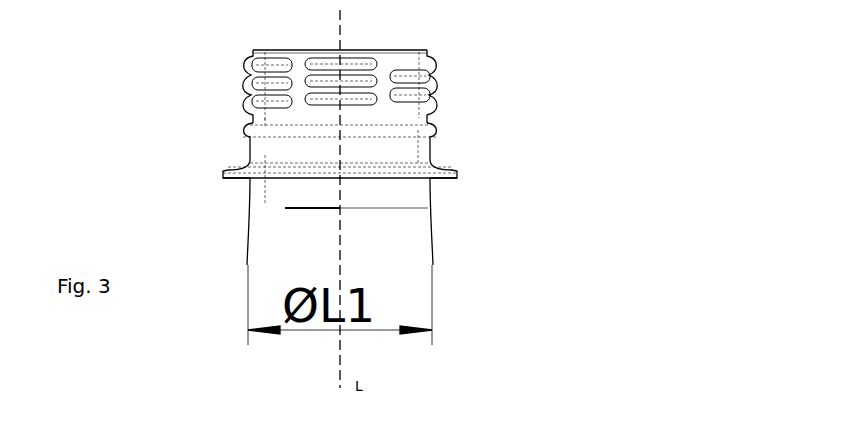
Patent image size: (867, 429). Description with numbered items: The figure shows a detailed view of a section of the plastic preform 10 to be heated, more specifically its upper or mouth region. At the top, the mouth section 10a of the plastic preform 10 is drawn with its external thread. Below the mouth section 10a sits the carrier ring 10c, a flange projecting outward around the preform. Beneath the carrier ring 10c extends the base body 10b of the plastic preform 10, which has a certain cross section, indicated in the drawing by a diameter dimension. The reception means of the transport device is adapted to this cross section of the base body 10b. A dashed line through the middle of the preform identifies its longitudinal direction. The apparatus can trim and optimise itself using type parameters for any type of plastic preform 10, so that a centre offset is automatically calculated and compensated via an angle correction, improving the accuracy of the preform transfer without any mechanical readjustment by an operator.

The plastic preform 10 is at (508, 182).
The mouth section 10a is at (270, 106).
The base body 10b is at (292, 238).
The carrier ring 10c is at (232, 171).